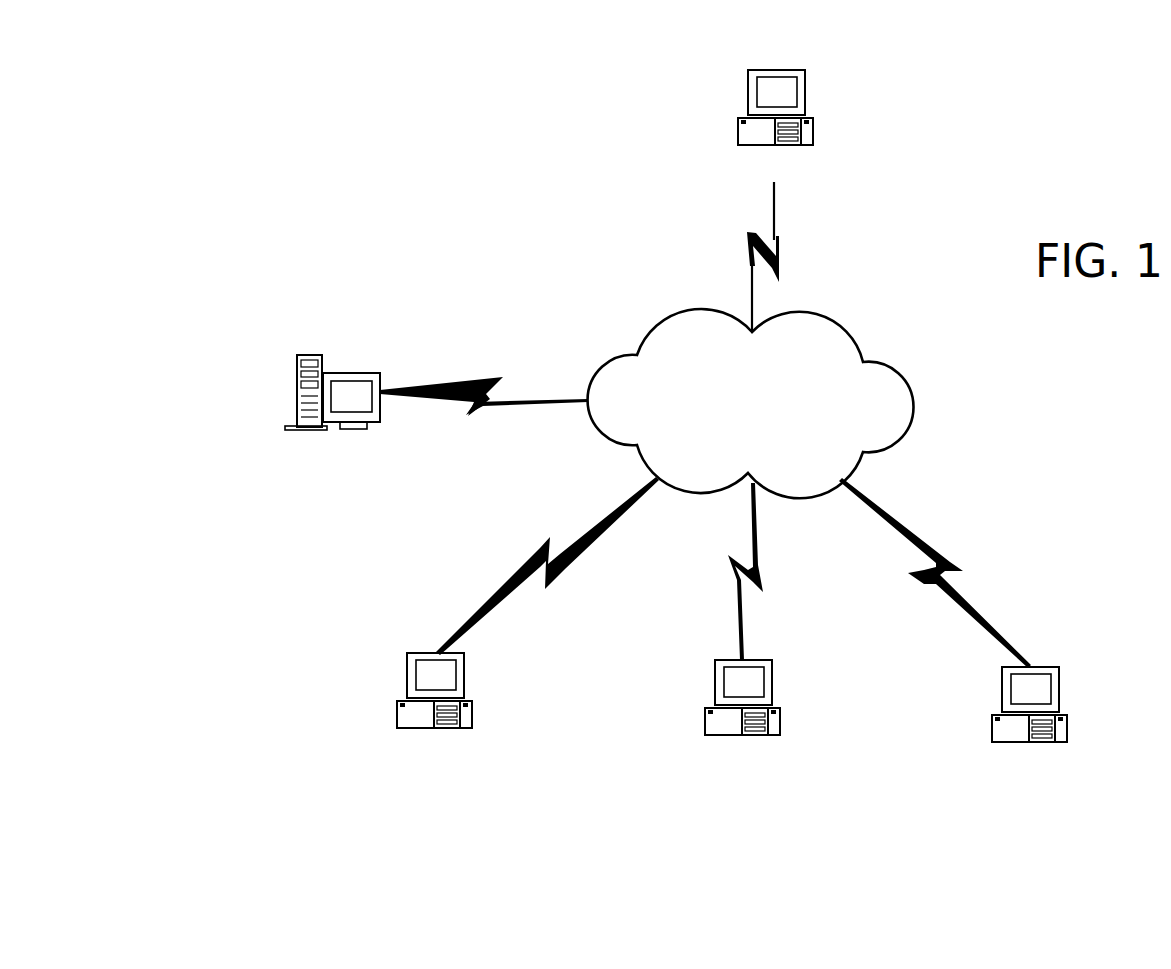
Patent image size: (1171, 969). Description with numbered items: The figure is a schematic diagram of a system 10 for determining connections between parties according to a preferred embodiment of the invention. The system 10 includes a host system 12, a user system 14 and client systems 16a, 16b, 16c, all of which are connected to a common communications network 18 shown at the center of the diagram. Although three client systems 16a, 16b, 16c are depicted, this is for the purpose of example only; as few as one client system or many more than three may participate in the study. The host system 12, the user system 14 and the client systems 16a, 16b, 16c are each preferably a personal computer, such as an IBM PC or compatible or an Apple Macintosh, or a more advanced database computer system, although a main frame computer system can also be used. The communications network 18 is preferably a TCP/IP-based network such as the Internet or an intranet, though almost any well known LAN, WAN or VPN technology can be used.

The system 10 is at (374, 115).
The host system 12 is at (297, 391).
The user system 14 is at (813, 125).
The client system 16a is at (395, 707).
The client system 16b is at (703, 715).
The client system 16c is at (992, 722).
The communications network 18 is at (913, 406).